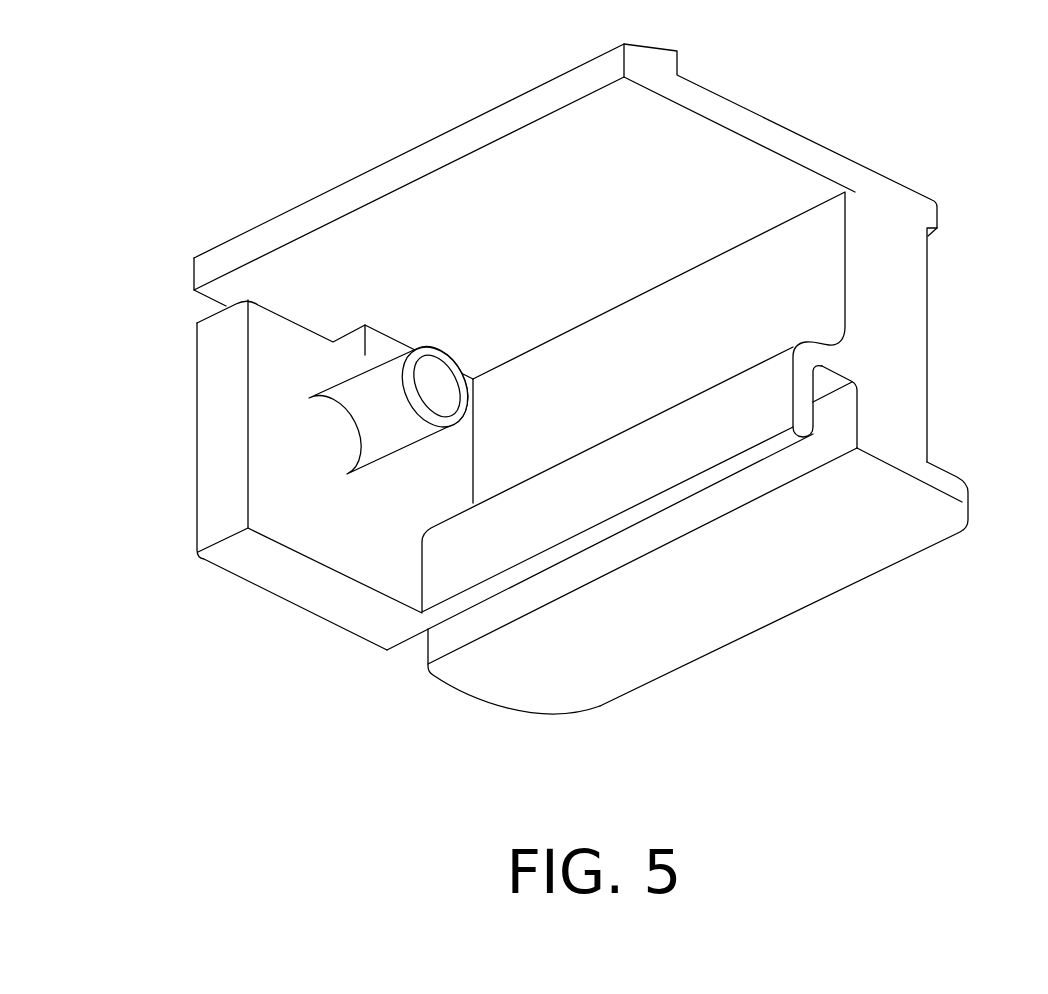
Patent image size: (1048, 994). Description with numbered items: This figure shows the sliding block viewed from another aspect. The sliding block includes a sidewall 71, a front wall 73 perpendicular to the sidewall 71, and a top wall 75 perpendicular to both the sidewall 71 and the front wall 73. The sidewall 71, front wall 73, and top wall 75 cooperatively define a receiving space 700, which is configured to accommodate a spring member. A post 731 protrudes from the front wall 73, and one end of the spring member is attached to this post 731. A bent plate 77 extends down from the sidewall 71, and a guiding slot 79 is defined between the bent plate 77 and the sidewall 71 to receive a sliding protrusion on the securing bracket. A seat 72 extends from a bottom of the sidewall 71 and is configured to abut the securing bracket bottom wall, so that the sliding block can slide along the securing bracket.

The top wall 75 is at (707, 153).
The receiving space 700 is at (802, 203).
The sidewall 71 is at (822, 295).
The front wall 73 is at (282, 385).
The post 731 is at (347, 438).
The seat 72 is at (845, 540).
The bent plate 77 is at (560, 503).
The guiding slot 79 is at (687, 518).